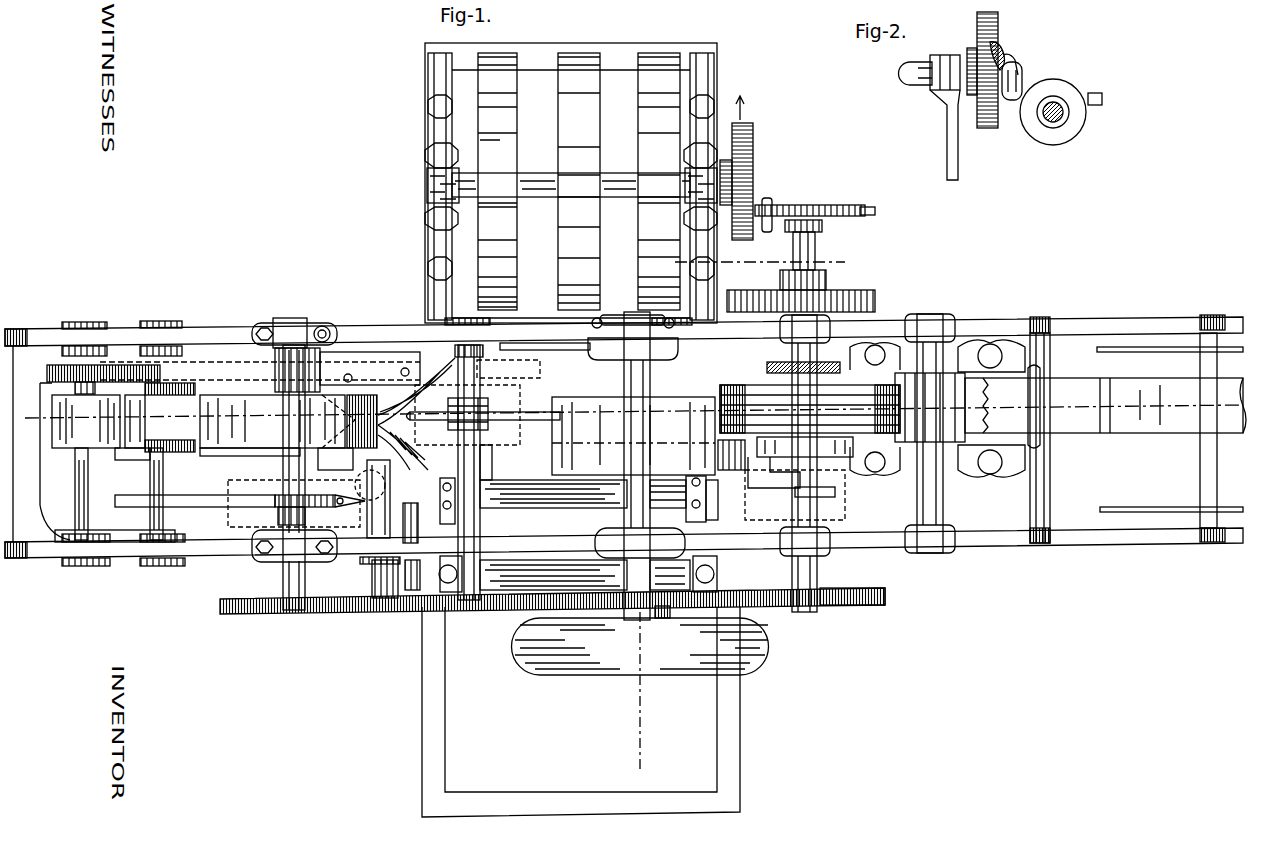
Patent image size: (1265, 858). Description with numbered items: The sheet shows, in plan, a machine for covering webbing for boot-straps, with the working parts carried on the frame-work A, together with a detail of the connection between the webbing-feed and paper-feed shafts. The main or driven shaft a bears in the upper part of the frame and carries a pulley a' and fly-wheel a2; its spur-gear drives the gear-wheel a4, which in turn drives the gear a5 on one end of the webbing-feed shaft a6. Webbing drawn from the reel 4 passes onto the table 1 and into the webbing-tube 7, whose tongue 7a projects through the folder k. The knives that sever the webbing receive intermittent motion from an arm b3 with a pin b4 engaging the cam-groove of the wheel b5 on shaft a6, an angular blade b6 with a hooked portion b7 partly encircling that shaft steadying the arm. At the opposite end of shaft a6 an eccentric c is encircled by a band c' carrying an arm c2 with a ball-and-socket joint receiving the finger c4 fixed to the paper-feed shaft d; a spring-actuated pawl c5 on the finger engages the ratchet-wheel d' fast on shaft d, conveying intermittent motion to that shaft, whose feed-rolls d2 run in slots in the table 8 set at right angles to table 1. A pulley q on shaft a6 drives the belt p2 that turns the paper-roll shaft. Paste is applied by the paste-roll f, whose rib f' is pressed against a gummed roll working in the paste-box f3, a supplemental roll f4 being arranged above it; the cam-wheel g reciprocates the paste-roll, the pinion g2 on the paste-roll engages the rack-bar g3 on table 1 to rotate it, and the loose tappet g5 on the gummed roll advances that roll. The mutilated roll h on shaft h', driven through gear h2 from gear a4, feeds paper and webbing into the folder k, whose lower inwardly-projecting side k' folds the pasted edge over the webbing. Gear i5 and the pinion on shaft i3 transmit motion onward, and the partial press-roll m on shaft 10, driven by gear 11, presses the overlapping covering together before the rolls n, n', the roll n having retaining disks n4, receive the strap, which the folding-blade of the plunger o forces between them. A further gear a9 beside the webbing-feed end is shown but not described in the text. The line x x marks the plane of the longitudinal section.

In FIG. 1, the table 8 is at (712, 48).
In FIG. 1, the fly-wheel a2 is at (623, 364).
In FIG. 1, the paper-feed shaft d is at (529, 181).
In FIG. 1, the feed-rolls d2 is at (659, 181).
In FIG. 1, the finger c4 is at (740, 172).
In FIG. 2, the finger c4 is at (974, 96).
In FIG. 1, the eccentric c is at (810, 199).
In FIG. 2, the eccentric c is at (1053, 104).
In FIG. 1, the band c' is at (868, 203).
In FIG. 2, the band c' is at (1106, 97).
In FIG. 1, the arm c2 is at (772, 204).
In FIG. 2, the arm c2 is at (1022, 84).
In FIG. 1, the webbing-feed shaft a6 is at (820, 568).
In FIG. 2, the webbing-feed shaft a6 is at (1040, 118).
In FIG. 1, the gear a9 is at (801, 301).
In FIG. 1, the frame-work A is at (230, 330).
In FIG. 1, the disks n4 is at (160, 385).
In FIG. 1, the section line x is at (638, 406).
In FIG. 1, the roll n' is at (86, 421).
In FIG. 1, the roll n is at (160, 417).
In FIG. 1, the partial-faced press-roll m is at (288, 421).
In FIG. 1, the table 1 is at (204, 495).
In FIG. 1, the plunger o is at (128, 478).
In FIG. 1, the shaft 10 is at (283, 466).
In FIG. 1, the gear i5 is at (306, 367).
In FIG. 1, the lower inwardly-projecting side k' is at (430, 472).
In FIG. 1, the folder k is at (399, 447).
In FIG. 1, the webbing-tube 7 is at (484, 405).
In FIG. 1, the tongue 7a is at (451, 408).
In FIG. 1, the mutilated roll h is at (475, 415).
In FIG. 1, the shaft h' is at (494, 462).
In FIG. 1, the paste-roll f is at (604, 484).
In FIG. 1, the rib f' is at (553, 504).
In FIG. 1, the supplemental roll f4 is at (578, 574).
In FIG. 1, the loose tappet g5 is at (437, 506).
In FIG. 1, the gear-pinion g2 is at (688, 502).
In FIG. 1, the rack-bar g3 is at (692, 520).
In FIG. 1, the main shaft a is at (556, 361).
In FIG. 2, the main shaft a is at (894, 73).
In FIG. 1, the pulley a' is at (633, 436).
In FIG. 1, the arm b3 is at (718, 455).
In FIG. 1, the belt p2 is at (794, 361).
In FIG. 1, the pulley q is at (840, 362).
In FIG. 1, the cam-wheel b5 is at (805, 447).
In FIG. 1, the pin b4 is at (774, 477).
In FIG. 1, the hooked portion b7 is at (824, 487).
In FIG. 1, the angular blade b6 is at (795, 495).
In FIG. 1, the reel 4 is at (1069, 438).
In FIG. 1, the gear-wheel a4 is at (552, 601).
In FIG. 1, the gear a5 is at (852, 606).
In FIG. 1, the gear 11 is at (314, 575).
In FIG. 1, the shaft i3 is at (370, 570).
In FIG. 1, the gear h2 is at (470, 614).
In FIG. 1, the paste-box f3 is at (581, 712).
In FIG. 1, the cam-wheel g is at (632, 697).
In FIG. 2, the ratchet-wheel d' is at (1008, 39).
In FIG. 2, the spring-actuated pawl c5 is at (1015, 56).